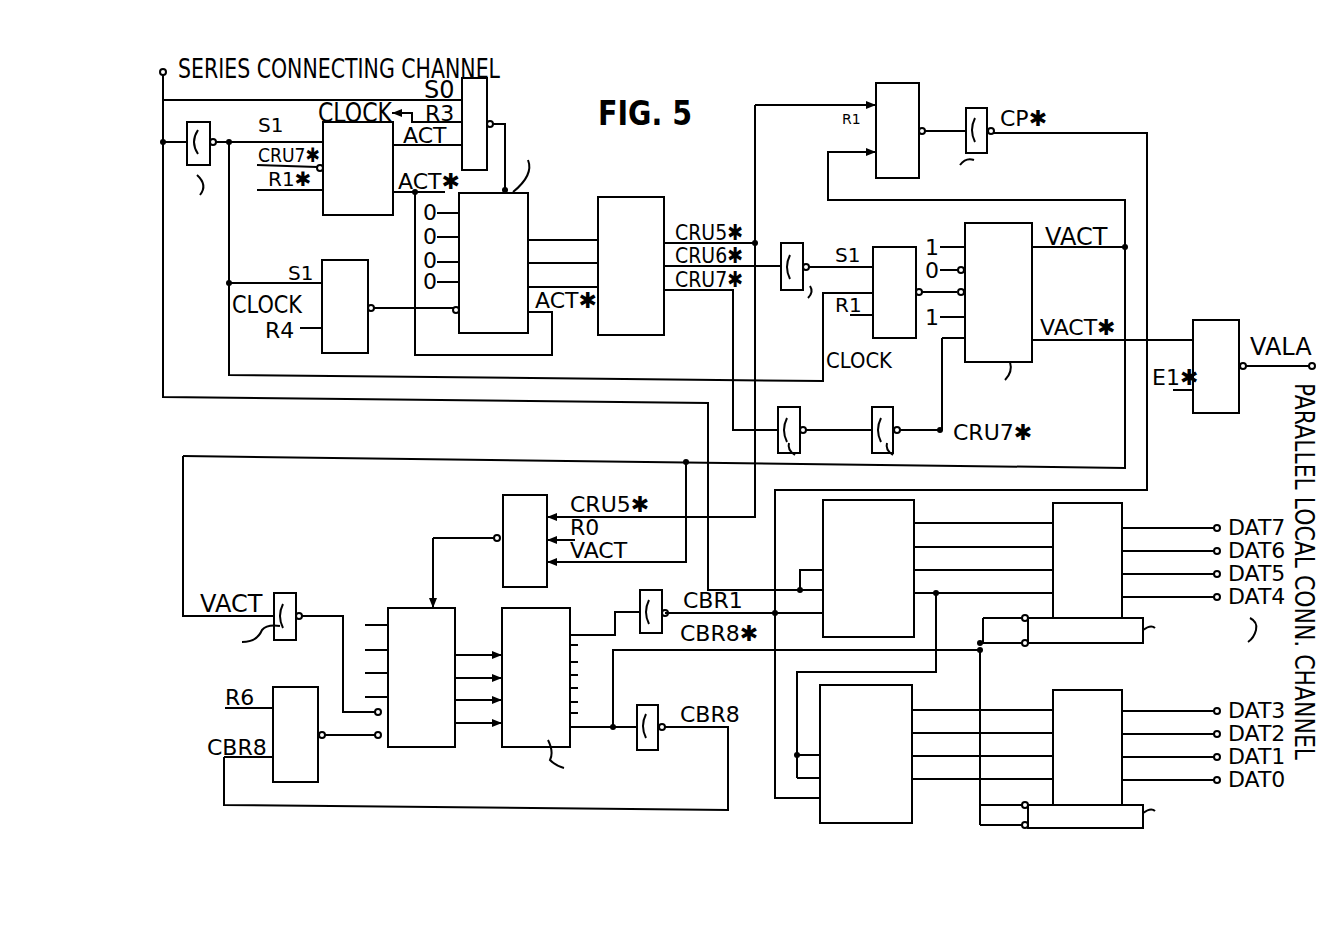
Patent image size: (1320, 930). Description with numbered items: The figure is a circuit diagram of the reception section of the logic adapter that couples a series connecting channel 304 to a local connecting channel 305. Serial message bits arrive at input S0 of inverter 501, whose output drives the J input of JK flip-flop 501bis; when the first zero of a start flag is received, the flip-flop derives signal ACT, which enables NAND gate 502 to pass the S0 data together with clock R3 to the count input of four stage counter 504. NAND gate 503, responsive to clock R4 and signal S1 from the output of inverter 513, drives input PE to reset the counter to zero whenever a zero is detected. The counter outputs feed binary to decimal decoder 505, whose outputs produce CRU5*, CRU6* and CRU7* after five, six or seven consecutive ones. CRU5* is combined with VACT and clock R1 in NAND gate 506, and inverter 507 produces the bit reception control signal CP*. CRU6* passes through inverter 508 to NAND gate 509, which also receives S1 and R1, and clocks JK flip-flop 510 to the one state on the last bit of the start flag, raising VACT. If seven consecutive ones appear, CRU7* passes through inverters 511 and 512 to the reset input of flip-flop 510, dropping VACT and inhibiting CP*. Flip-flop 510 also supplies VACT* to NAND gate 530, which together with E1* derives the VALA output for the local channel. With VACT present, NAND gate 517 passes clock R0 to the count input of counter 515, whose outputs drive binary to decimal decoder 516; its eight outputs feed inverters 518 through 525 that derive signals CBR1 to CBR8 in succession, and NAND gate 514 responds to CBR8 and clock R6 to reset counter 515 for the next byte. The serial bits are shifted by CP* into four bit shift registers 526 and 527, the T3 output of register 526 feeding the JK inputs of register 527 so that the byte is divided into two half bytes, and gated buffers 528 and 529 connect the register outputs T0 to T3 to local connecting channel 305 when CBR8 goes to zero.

The series connecting channel 304 is at (194, 135).
The local connecting channel 305 is at (1266, 690).
The inverter 501 is at (260, 115).
The JK flip-flop 501bis is at (324, 200).
The NAND gate 502 is at (488, 85).
The NAND gate 503 is at (333, 265).
The four stage counter 504 is at (494, 328).
The binary to decimal decoder 505 is at (630, 210).
The NAND gate 506 is at (910, 105).
The inverter 507 is at (988, 140).
The inverter 508 is at (798, 250).
The NAND gate 509 is at (880, 335).
The JK flip-flop VACT 510 is at (1015, 360).
The inverter 511 is at (796, 420).
The inverter 512 is at (888, 420).
The inverter 513 is at (287, 602).
The NAND gate 514 is at (287, 695).
The counter 515 is at (394, 622).
The binary to decimal decoder 516 is at (505, 618).
The NAND gate 517 is at (503, 515).
The inverter 518 is at (645, 602).
The inverter 525 is at (652, 712).
The four bit shift register 526 is at (898, 500).
The four bit shift register 527 is at (895, 802).
The gated buffer 528 is at (1115, 505).
The gated buffer 529 is at (1115, 692).
The NAND gate 530 is at (1218, 330).